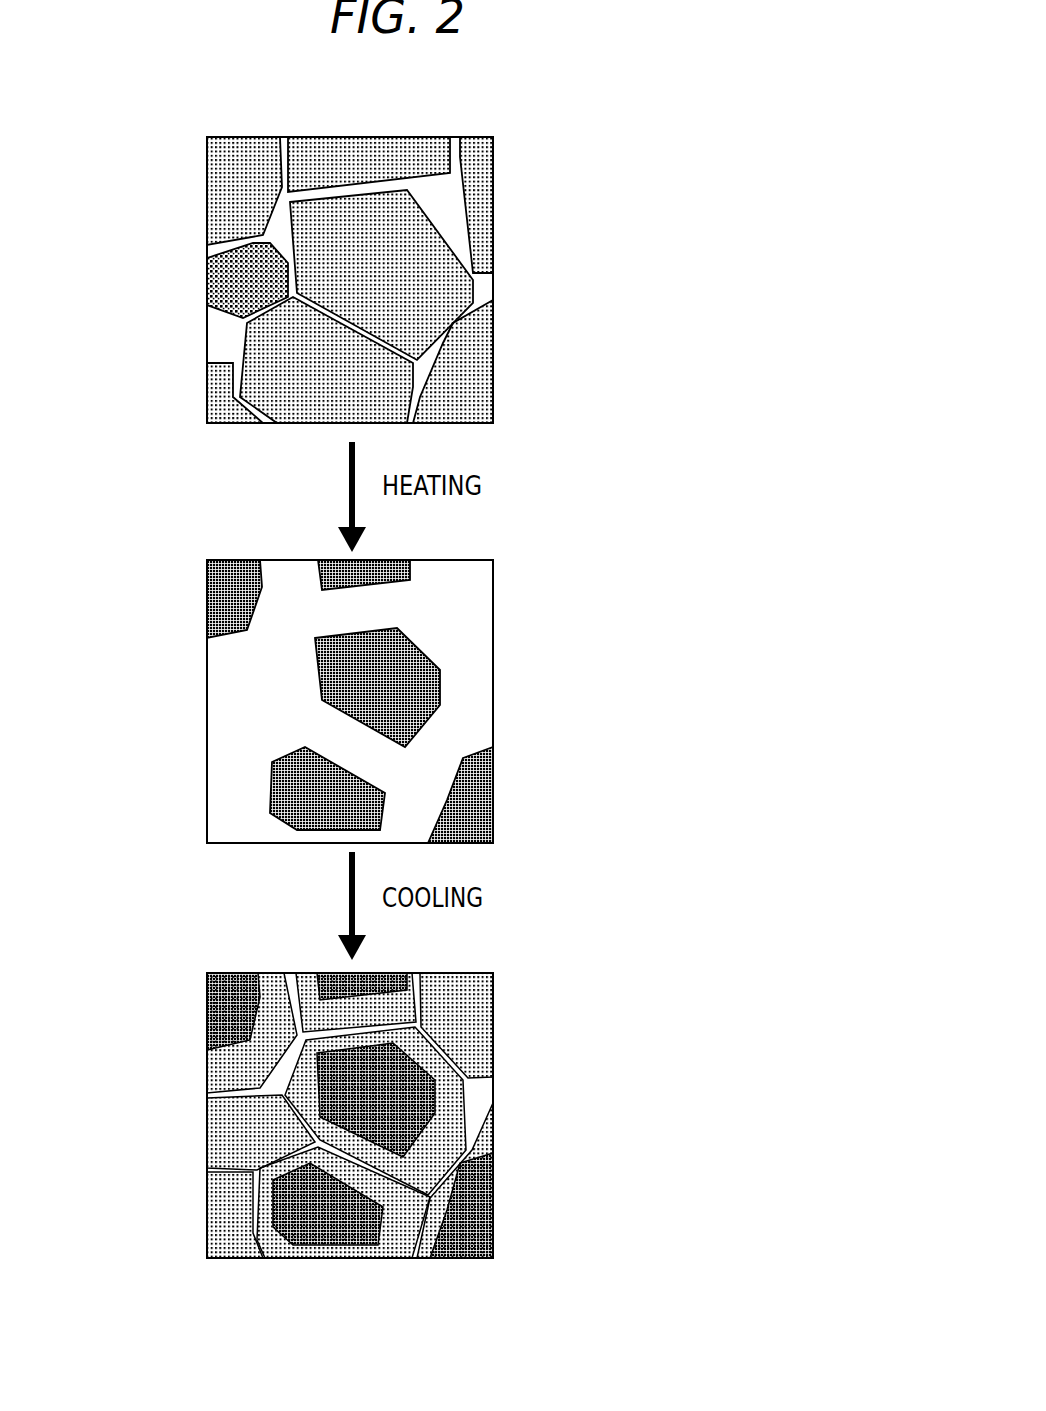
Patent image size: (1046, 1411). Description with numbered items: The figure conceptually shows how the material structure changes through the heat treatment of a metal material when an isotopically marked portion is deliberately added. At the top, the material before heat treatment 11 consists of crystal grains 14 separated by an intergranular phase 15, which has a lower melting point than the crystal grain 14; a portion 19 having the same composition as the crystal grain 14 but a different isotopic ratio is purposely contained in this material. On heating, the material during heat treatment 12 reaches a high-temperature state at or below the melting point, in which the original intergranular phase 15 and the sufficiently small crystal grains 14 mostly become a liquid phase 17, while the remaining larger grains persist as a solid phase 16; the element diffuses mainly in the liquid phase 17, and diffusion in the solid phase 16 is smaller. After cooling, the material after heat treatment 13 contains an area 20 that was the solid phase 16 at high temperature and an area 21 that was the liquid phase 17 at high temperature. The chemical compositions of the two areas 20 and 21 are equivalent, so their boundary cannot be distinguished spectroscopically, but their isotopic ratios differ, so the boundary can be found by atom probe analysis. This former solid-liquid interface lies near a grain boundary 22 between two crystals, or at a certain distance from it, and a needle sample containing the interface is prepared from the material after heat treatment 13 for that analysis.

The material before heat treatment 11 is at (145, 130).
The material during heat treatment 12 is at (188, 557).
The material after heat treatment 13 is at (188, 968).
The crystal grain 14 is at (230, 167).
The intergranular phase 15 is at (450, 200).
The solid phase 16 is at (397, 673).
The liquid phase 17 is at (450, 597).
The portion having same composition and different isotopic ratio 19 is at (207, 270).
The solid phase area in high-temperature state 20 is at (403, 1090).
The liquid phase area in high-temperature state 21 is at (447, 1130).
The grain boundary between two crystals 22 is at (357, 1033).